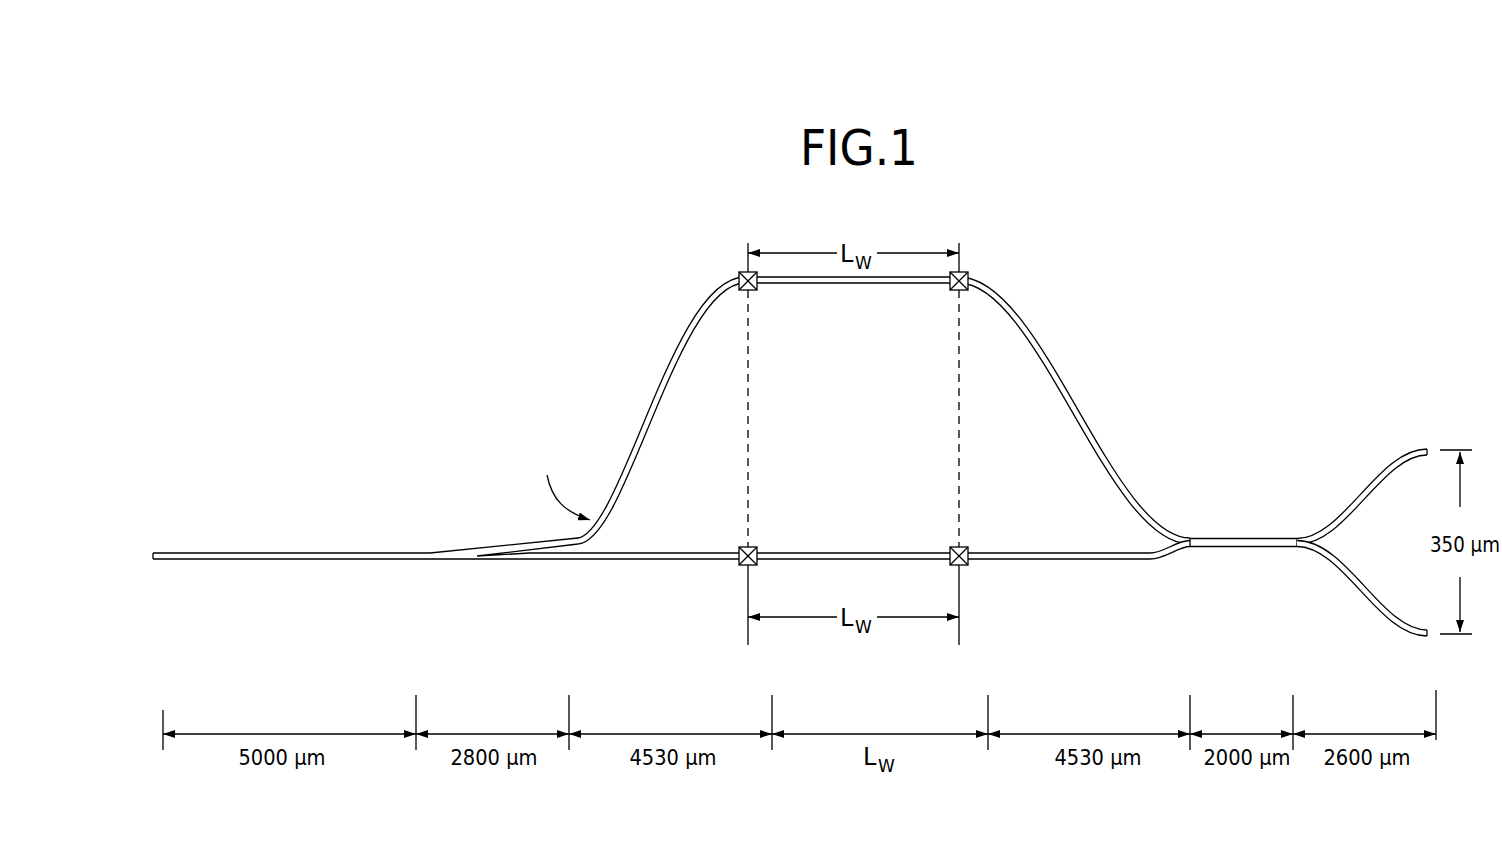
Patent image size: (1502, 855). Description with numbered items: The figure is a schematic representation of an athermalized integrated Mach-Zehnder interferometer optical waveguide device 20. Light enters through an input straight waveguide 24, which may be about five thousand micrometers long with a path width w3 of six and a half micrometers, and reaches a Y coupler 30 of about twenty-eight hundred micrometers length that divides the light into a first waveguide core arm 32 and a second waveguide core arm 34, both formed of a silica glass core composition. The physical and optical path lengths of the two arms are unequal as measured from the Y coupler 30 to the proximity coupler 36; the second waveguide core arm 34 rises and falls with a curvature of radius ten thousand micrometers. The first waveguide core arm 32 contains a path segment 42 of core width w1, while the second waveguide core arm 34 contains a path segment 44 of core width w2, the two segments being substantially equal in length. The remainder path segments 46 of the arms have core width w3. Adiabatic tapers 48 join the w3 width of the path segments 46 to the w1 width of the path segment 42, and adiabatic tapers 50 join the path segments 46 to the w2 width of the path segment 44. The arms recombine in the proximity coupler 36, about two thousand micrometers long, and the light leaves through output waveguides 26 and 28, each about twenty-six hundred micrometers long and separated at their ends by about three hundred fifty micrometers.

The athermalized integrated optical waveguide device 20 is at (482, 238).
The input straight waveguide 24 is at (325, 581).
The output waveguide 26 is at (1415, 437).
The output waveguide 28 is at (1410, 612).
The Y coupler 30 is at (458, 527).
The first waveguide core arm 32 is at (817, 569).
The second waveguide core arm 34 is at (752, 312).
The proximity coupler 36 is at (1241, 562).
The path segment 42 is at (852, 547).
The path segment 44 is at (865, 284).
The path segments 46 is at (642, 438).
The adiabatic tapers 48 is at (753, 547).
The adiabatic tapers 50 is at (742, 272).